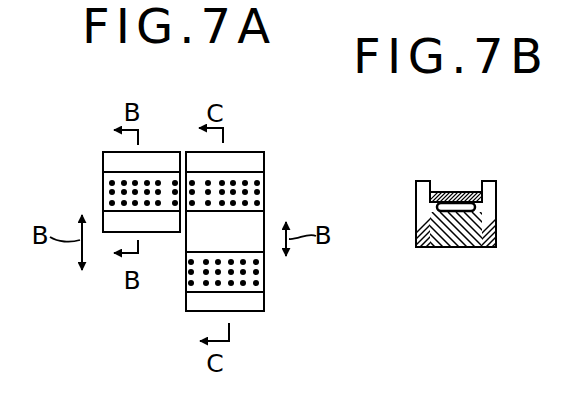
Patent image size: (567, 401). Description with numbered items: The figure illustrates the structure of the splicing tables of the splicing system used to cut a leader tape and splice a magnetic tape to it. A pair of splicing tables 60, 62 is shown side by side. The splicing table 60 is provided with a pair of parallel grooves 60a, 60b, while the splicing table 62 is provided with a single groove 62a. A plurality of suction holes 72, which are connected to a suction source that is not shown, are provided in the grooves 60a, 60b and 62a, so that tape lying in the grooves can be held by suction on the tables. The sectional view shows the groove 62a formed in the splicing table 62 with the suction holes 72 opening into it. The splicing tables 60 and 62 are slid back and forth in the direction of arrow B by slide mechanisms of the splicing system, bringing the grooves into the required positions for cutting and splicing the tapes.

In FIG. 7A, the splicing table 60 is at (269, 204).
In FIG. 7A, the groove 60a is at (264, 175).
In FIG. 7A, the groove 60b is at (265, 290).
In FIG. 7A, the splicing table 62 is at (103, 163).
In FIG. 7B, the splicing table 62 is at (478, 213).
In FIG. 7A, the groove 62a is at (102, 180).
In FIG. 7B, the groove 62a is at (452, 192).
In FIG. 7A, the suction holes 72 is at (110, 195).
In FIG. 7B, the suction holes 72 is at (470, 192).